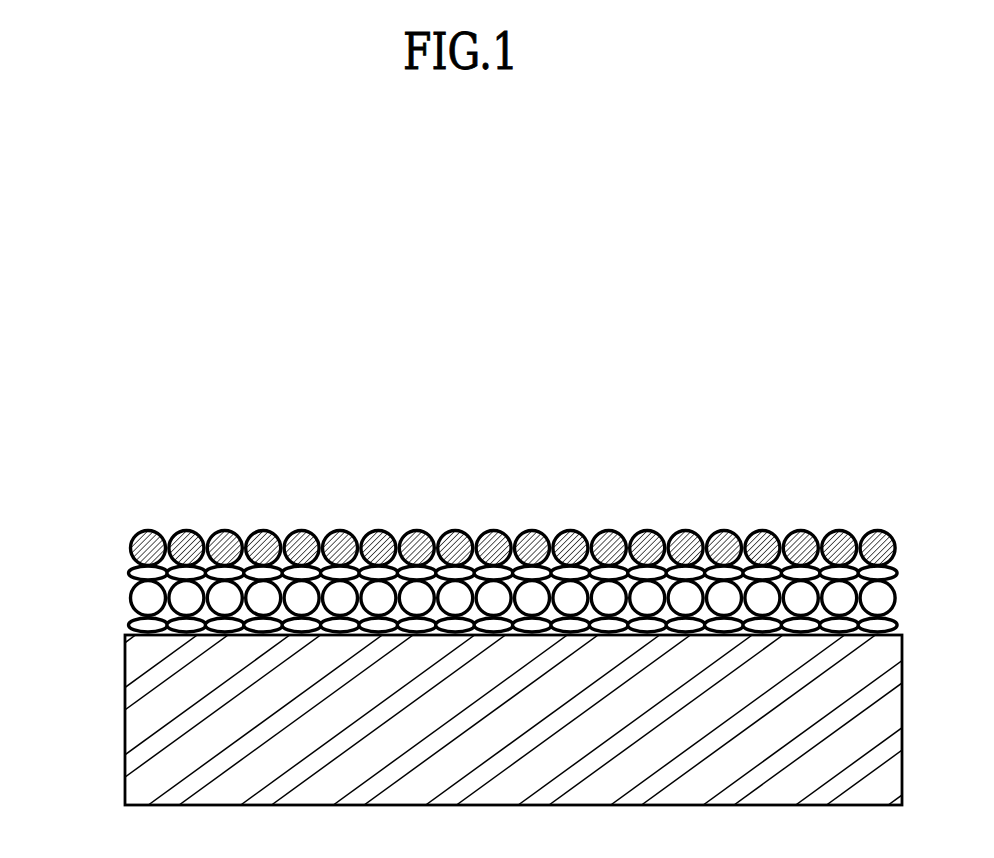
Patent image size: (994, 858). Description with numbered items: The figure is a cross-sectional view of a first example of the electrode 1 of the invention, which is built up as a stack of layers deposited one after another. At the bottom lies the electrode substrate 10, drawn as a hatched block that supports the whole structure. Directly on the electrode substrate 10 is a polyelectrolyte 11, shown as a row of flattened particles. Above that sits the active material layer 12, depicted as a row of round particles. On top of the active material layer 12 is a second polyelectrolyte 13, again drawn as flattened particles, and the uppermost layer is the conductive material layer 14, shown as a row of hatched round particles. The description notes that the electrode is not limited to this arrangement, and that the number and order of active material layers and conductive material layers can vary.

The electrode 1 is at (597, 430).
The electrode substrate 10 is at (135, 724).
The polyelectrolyte 11 is at (126, 632).
The active material layer 12 is at (135, 600).
The polyelectrolyte 13 is at (130, 572).
The conductive material layer 14 is at (131, 544).